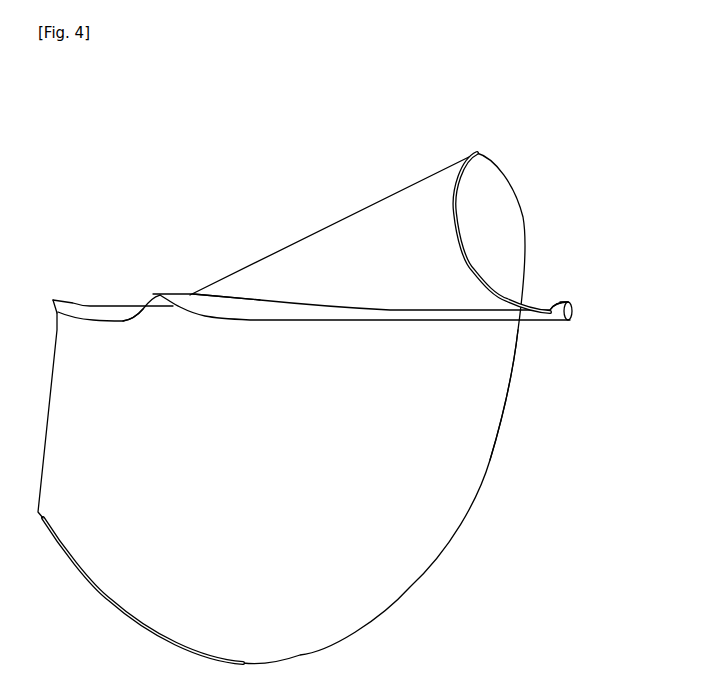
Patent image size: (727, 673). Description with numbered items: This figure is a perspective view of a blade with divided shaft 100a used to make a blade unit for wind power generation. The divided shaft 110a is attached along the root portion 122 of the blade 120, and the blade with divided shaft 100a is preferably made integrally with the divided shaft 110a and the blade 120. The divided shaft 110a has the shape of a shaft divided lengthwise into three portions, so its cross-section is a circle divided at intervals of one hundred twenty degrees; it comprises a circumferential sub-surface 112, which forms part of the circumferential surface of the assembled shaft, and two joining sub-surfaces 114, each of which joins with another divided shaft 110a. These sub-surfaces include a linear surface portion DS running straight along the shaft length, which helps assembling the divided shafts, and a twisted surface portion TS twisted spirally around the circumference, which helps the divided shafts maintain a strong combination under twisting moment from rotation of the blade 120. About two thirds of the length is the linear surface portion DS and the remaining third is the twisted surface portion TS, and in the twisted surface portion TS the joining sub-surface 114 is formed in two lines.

The blade with divided shaft 100a is at (210, 120).
The divided shaft 110a is at (572, 312).
The circumferential sub-surface 112 is at (497, 322).
The joining sub-surface 114 is at (597, 343).
The blade 120 is at (383, 573).
The root portion 122 is at (365, 305).
The twisted surface portion TS is at (197, 303).
The linear surface portion DS is at (440, 320).